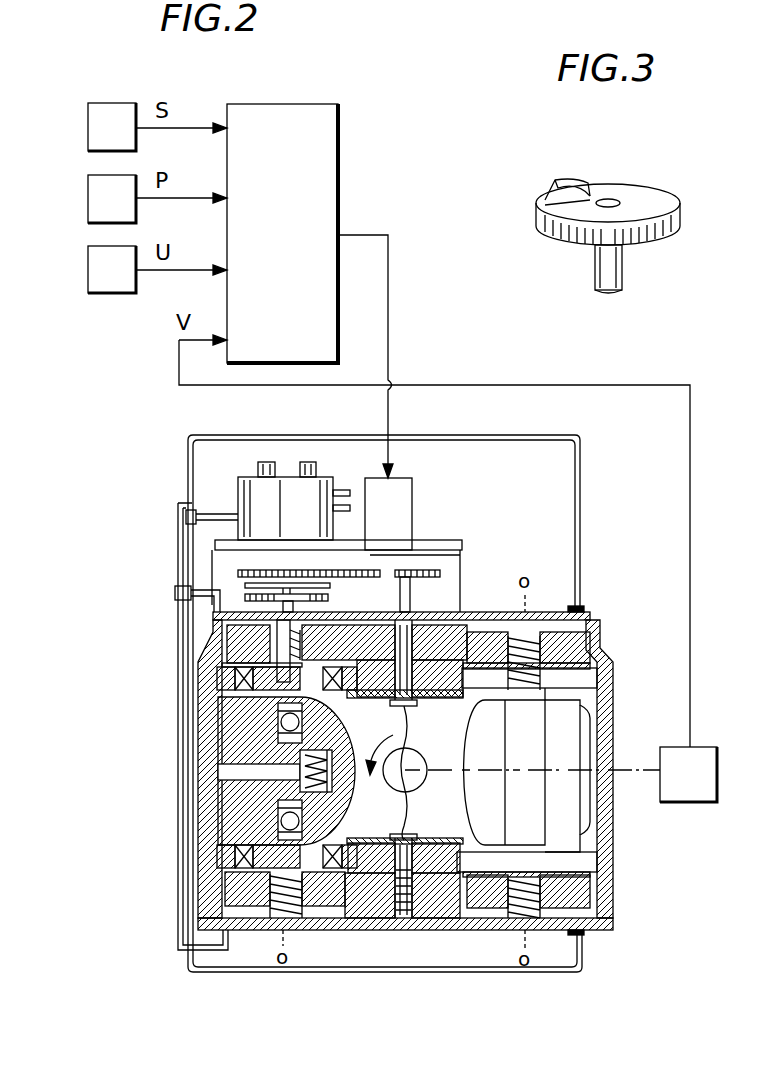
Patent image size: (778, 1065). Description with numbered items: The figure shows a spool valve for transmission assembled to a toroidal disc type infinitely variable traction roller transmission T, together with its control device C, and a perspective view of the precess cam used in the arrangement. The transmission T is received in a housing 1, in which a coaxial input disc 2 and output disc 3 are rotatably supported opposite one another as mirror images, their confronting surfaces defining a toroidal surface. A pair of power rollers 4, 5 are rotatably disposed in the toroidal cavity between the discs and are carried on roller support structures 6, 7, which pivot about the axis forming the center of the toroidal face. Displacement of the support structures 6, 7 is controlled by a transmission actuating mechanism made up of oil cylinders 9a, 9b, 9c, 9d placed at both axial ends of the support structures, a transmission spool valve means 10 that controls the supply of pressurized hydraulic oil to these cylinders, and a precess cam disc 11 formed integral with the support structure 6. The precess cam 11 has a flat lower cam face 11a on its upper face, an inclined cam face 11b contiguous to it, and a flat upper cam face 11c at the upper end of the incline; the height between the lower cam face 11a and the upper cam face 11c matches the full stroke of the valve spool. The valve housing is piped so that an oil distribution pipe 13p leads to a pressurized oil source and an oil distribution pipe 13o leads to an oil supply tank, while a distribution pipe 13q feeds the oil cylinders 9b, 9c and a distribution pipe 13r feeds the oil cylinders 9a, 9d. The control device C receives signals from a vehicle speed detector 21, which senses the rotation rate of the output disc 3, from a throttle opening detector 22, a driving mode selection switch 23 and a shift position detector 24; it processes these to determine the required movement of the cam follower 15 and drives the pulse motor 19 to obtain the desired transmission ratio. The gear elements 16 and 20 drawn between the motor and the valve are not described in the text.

In FIG. 2, the throttle opening detector 22 is at (88, 115).
In FIG. 2, the driving mode selection switch 23 is at (88, 187).
In FIG. 2, the shift position detector 24 is at (88, 259).
In FIG. 2, the control device C is at (277, 104).
In FIG. 2, the vehicle speed detector 21 is at (705, 802).
In FIG. 2, the pulse motor 19 is at (412, 495).
In FIG. 2, the distribution pipe 13r is at (188, 472).
In FIG. 2, the distribution pipe 13q is at (186, 518).
In FIG. 2, the cam follower 15 is at (262, 590).
In FIG. 2, the transmission spool valve means 10 is at (242, 487).
In FIG. 2, the oil distribution pipe 13o is at (345, 490).
In FIG. 2, the oil distribution pipe 13p is at (350, 505).
In FIG. 2, the gear 16 is at (245, 574).
In FIG. 2, the gear 20 is at (422, 575).
In FIG. 2, the precess cam disc 11 is at (328, 597).
In FIG. 3, the precess cam disc 11 is at (588, 211).
In FIG. 2, the housing 1 is at (566, 612).
In FIG. 2, the toroidal type infinitely variable transmission T is at (604, 645).
In FIG. 2, the oil cylinder 9b is at (225, 620).
In FIG. 2, the oil cylinder 9d is at (489, 612).
In FIG. 2, the power roller 4 is at (350, 726).
In FIG. 2, the roller support structure 6 is at (220, 740).
In FIG. 2, the power roller 5 is at (465, 730).
In FIG. 2, the roller support structure 7 is at (583, 733).
In FIG. 2, the output disc 3 is at (428, 873).
In FIG. 2, the input disc 2 is at (370, 918).
In FIG. 2, the oil cylinder 9a is at (252, 918).
In FIG. 2, the oil cylinder 9c is at (488, 918).
In FIG. 3, the lower cam face 11a is at (590, 212).
In FIG. 3, the inclined cam face 11b is at (556, 204).
In FIG. 3, the upper cam face 11c is at (548, 183).